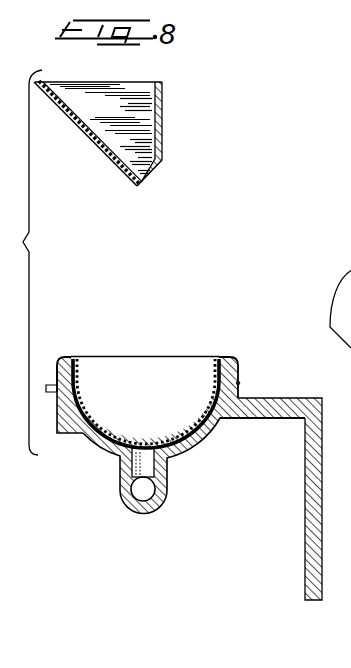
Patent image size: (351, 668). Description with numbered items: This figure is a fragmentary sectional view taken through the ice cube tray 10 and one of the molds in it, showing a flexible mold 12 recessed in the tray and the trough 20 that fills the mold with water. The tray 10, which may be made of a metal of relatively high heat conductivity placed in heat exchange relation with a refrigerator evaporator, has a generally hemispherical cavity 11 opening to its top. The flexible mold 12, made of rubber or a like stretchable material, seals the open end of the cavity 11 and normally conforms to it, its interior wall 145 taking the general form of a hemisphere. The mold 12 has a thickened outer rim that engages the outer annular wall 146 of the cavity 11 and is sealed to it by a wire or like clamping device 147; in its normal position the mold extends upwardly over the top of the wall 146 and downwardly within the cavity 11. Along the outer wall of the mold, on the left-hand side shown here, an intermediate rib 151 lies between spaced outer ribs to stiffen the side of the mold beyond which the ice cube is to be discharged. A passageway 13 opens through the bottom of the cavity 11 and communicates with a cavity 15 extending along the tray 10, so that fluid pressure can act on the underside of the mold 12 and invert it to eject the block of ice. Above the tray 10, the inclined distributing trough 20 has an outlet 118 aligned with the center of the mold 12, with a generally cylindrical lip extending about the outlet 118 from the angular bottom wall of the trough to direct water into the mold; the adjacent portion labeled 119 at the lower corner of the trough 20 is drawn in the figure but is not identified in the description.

The tray 10 is at (95, 446).
The cavity 11 is at (78, 396).
The flexible mold 12 is at (199, 356).
The passageway 13 is at (148, 473).
The communicating cavity 15 is at (146, 493).
The trough 20 is at (162, 125).
The outlet 118 is at (152, 172).
The inner corner wall 119 is at (163, 165).
The interior wall 145 is at (112, 432).
The outer annular wall 146 is at (233, 361).
The clamping device 147 is at (240, 383).
The intermediate rib 151 is at (90, 407).